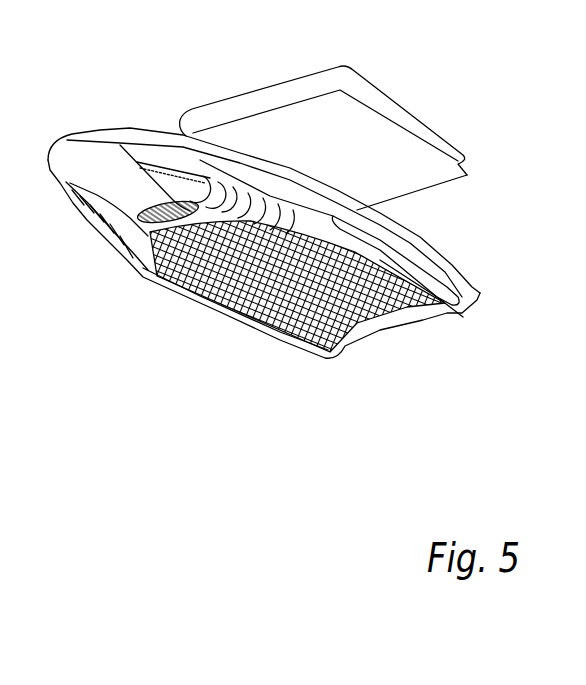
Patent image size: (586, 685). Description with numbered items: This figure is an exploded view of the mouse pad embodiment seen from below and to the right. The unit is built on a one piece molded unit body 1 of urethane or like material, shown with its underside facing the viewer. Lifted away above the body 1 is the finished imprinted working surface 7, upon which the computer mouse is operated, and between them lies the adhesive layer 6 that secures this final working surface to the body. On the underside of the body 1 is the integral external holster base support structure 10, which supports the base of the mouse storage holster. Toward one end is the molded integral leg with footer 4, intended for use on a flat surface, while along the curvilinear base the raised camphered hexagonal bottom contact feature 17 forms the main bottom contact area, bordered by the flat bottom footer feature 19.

The one piece molded unit body 1 is at (88, 143).
The molded integral leg with footer 4 is at (458, 303).
The adhesive layer 6 is at (400, 183).
The finished imprinted working surface 7 is at (257, 91).
The integral external holster base support structure 10 is at (198, 176).
The raised camphered hexagonal bottom contact feature 17 is at (222, 287).
The flat bottom footer feature 19 is at (245, 327).